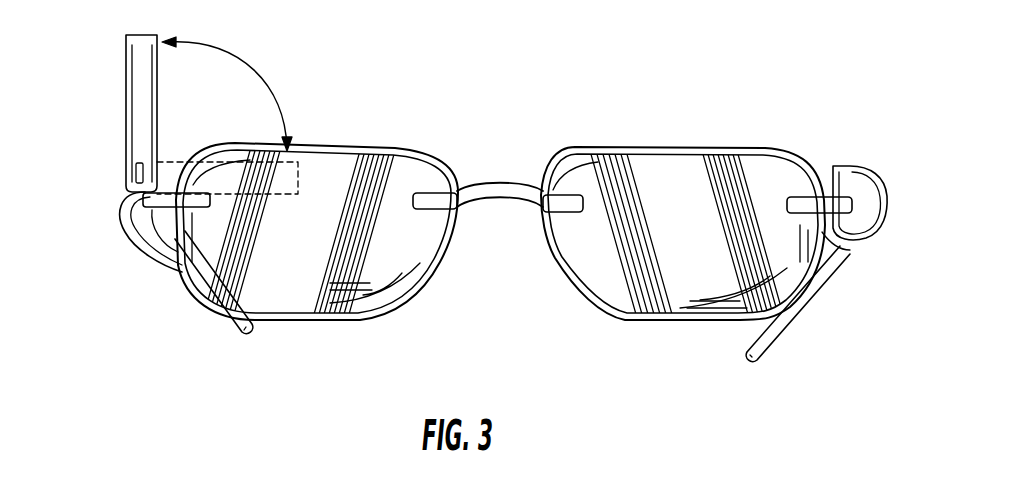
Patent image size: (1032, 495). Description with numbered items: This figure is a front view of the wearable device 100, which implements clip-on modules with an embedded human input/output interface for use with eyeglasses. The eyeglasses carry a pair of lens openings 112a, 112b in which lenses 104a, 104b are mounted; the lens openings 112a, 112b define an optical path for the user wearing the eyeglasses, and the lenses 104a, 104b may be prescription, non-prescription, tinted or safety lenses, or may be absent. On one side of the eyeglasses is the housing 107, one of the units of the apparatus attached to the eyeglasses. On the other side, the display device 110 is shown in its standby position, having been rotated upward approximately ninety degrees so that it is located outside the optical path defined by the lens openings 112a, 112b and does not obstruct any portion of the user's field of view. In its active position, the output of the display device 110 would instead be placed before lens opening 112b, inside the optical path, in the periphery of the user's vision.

The wearable device 100 is at (408, 80).
The lens 104a is at (603, 293).
The lens 104b is at (273, 300).
The lens opening 112a is at (708, 281).
The lens opening 112b is at (320, 280).
The display device 110 is at (126, 89).
The housing 107 is at (867, 167).